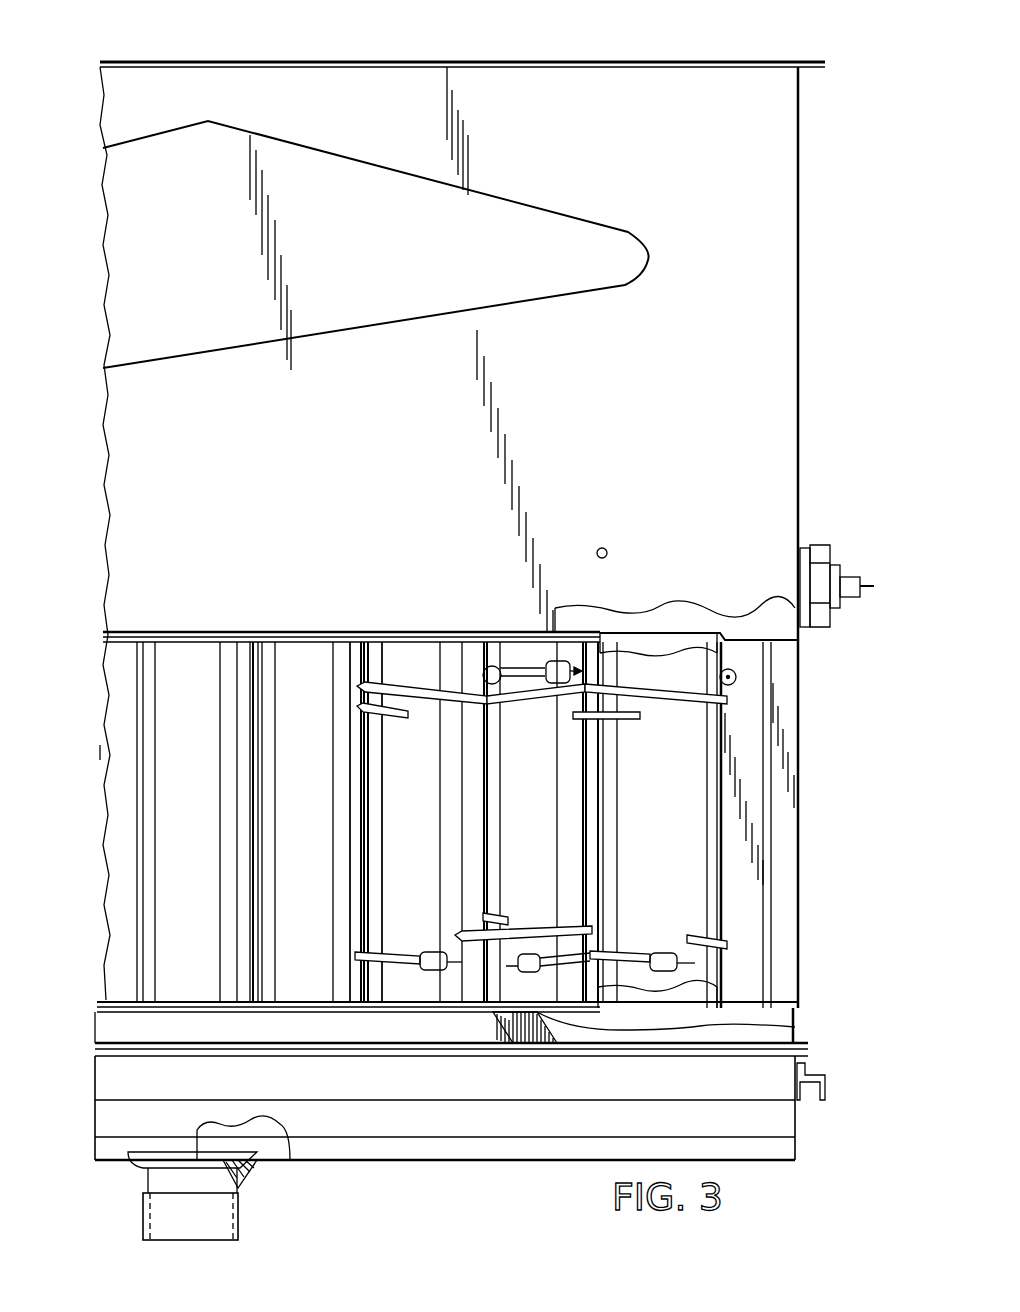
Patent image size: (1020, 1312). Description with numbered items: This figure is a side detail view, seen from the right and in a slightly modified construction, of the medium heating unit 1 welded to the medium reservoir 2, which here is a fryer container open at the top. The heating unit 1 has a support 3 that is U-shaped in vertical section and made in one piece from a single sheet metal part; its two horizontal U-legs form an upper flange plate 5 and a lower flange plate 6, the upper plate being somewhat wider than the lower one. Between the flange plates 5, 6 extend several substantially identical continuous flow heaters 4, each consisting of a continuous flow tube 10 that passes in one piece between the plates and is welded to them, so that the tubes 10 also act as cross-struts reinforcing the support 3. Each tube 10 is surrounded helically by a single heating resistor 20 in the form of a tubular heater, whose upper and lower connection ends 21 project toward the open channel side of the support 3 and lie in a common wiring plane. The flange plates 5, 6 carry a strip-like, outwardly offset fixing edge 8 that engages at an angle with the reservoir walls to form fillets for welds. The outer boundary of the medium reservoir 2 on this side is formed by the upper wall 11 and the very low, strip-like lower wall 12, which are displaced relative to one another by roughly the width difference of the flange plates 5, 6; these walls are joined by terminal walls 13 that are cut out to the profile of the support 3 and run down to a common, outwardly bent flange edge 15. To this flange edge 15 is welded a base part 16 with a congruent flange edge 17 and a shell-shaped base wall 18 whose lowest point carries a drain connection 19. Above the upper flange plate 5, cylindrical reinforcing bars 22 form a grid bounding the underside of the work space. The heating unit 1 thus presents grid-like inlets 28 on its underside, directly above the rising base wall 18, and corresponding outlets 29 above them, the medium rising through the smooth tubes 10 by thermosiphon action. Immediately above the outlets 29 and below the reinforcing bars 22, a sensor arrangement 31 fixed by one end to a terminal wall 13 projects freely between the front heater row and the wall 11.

The medium heating unit 1 is at (377, 548).
The medium reservoir 2 is at (660, 42).
The support 3 is at (88, 754).
The continuous flow heaters 4 is at (352, 798).
The upper flange plate 5 is at (318, 641).
The lower flange plate 6 is at (302, 1004).
The fixing edge 8 is at (773, 640).
The continuous flow tubes 10 is at (352, 895).
The upper wall 11 is at (128, 517).
The lower wall 12 is at (190, 1028).
The terminal walls 13 is at (798, 215).
The flange edge 15 is at (353, 1044).
The base part 16 is at (460, 1178).
The flange edge of base part 17 is at (377, 1057).
The base wall 18 is at (283, 1140).
The drain connection 19 is at (170, 1182).
The heating resistor 20 is at (433, 703).
The connection ends 21 is at (560, 668).
The reinforcing bars 22 is at (598, 550).
The inlets 28 is at (693, 1006).
The outlets 29 is at (682, 640).
The sensor arrangement 31 is at (819, 525).